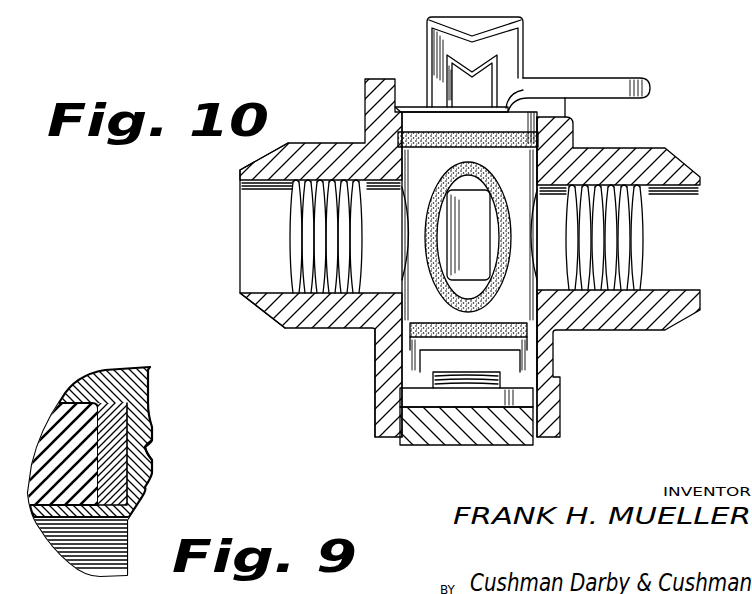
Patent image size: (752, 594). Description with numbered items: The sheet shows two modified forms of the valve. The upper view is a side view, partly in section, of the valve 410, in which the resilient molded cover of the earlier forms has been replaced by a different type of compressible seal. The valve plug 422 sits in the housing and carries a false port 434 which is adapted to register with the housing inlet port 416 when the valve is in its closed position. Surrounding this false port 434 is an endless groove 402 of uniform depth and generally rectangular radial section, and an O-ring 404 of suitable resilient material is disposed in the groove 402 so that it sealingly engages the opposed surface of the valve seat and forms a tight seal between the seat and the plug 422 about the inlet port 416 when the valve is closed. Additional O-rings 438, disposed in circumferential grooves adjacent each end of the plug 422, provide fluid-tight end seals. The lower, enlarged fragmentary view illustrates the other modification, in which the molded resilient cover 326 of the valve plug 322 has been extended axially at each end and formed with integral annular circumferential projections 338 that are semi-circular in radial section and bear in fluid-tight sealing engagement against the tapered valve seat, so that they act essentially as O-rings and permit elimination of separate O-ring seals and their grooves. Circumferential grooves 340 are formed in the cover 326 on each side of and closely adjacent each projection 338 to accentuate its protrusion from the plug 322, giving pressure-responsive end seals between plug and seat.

In FIG. 10, the valve 410 is at (626, 140).
In FIG. 10, the endless groove 402 is at (378, 334).
In FIG. 10, the O-ring 404 is at (530, 300).
In FIG. 10, the housing inlet port 416 is at (252, 198).
In FIG. 10, the valve plug 422 is at (377, 360).
In FIG. 10, the false port 434 is at (488, 272).
In FIG. 10, the O-rings 438 is at (542, 138).
In FIG. 9, the valve plug 322 is at (135, 393).
In FIG. 9, the circumferential grooves 340 is at (147, 423).
In FIG. 9, the annular circumferential projections 338 is at (150, 447).
In FIG. 9, the molded resilient cover 326 is at (140, 511).